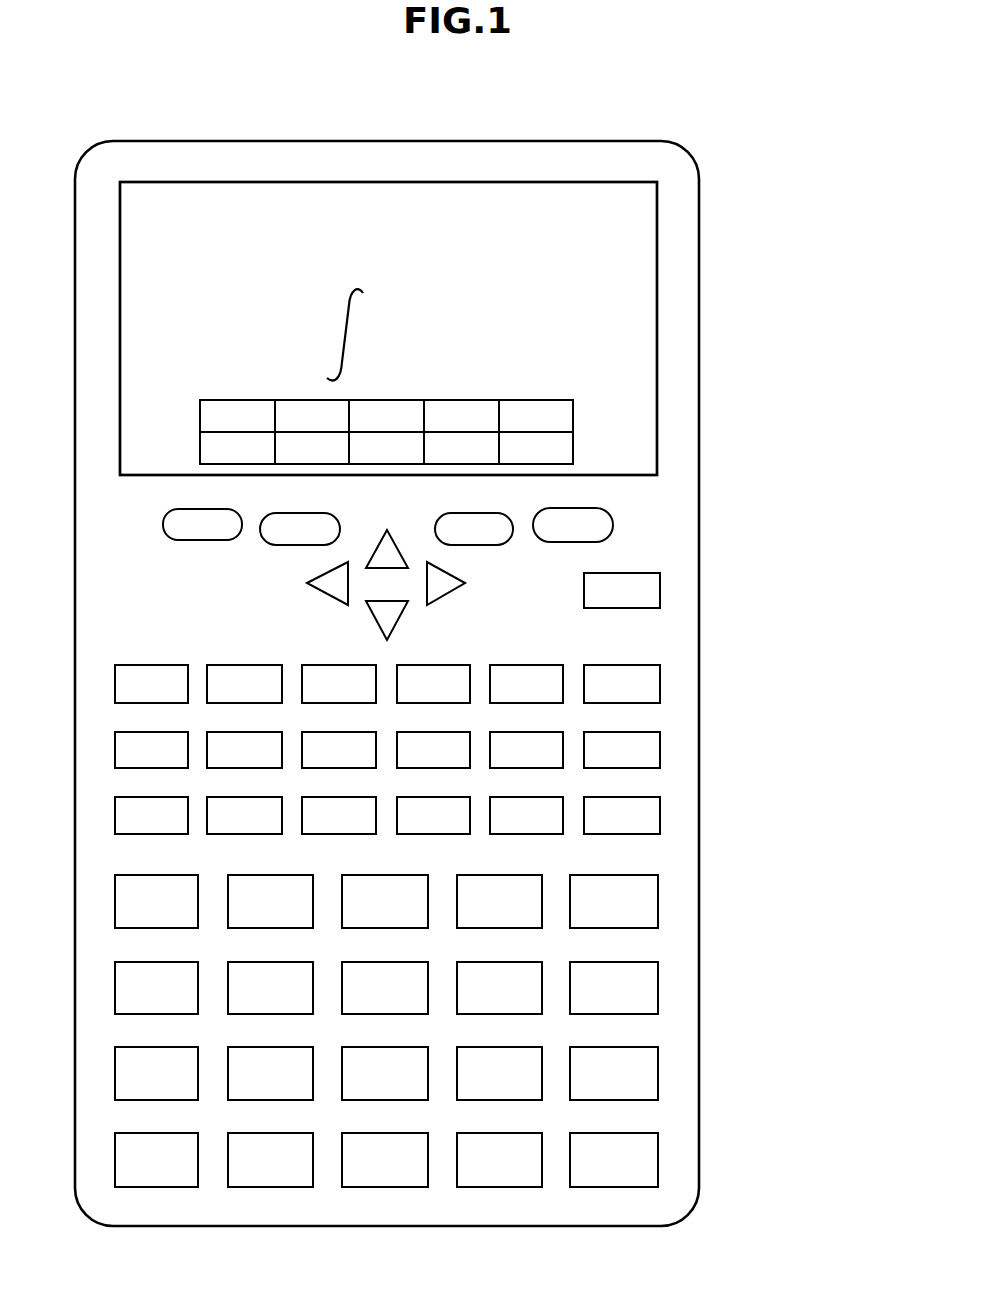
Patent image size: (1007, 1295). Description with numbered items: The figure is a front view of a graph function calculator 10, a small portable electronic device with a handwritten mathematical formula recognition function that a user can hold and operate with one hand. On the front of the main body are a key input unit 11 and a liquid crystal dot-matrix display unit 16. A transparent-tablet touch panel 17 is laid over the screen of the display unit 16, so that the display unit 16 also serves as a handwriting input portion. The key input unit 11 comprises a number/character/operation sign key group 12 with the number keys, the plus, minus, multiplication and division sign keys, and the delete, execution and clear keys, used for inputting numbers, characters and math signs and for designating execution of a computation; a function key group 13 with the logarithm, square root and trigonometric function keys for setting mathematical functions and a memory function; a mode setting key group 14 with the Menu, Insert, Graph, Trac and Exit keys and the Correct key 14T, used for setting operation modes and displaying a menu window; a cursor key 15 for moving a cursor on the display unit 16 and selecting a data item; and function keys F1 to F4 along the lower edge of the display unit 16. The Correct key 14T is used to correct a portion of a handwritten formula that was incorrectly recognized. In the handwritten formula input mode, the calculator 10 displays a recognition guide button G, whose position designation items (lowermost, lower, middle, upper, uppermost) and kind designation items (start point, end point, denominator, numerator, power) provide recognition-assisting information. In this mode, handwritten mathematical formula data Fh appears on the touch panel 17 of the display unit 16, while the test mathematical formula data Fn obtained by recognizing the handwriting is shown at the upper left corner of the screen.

The graph function calculator 10 is at (579, 140).
The key input unit 11 is at (494, 842).
The number/character/operation sign key group 12 is at (466, 1032).
The function key group 13 is at (762, 730).
The mode setting key group 14 is at (466, 640).
The [Correct] key 14T is at (675, 590).
The cursor key 15 is at (385, 578).
The liquid crystal dot-matrix display unit 16 is at (640, 288).
The transparent-tablet touch panel 17 is at (645, 232).
The recognition guide button G is at (543, 397).
The test mathematical formula data Fn is at (210, 208).
The handwritten mathematical formula data Fh is at (429, 293).